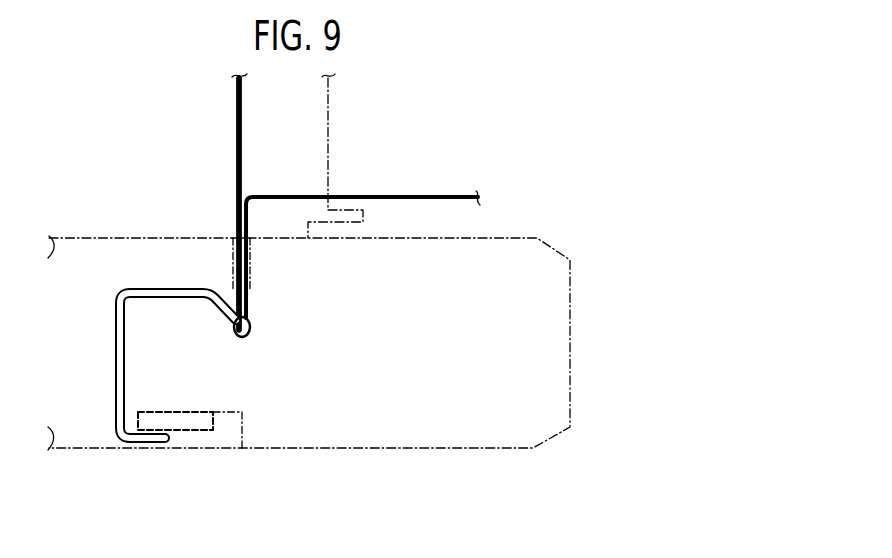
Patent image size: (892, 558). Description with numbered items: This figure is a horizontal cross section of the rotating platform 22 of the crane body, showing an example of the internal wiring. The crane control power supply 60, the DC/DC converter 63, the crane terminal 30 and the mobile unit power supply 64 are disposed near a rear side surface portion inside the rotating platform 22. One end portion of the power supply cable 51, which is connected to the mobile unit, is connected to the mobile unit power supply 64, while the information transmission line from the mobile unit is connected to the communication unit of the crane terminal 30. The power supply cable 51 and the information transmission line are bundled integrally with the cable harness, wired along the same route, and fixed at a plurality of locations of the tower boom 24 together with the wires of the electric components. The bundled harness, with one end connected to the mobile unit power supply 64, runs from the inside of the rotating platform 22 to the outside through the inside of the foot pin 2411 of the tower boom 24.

The rotating platform 22 is at (442, 450).
The tower boom 24 is at (330, 115).
The foot pin 2411 is at (233, 250).
The power supply cable 51 is at (239, 185).
The crane terminal 30 is at (187, 430).
The crane control power supply 60 is at (175, 421).
The DC/DC converter 63 is at (175, 421).
The mobile unit power supply 64 is at (175, 421).